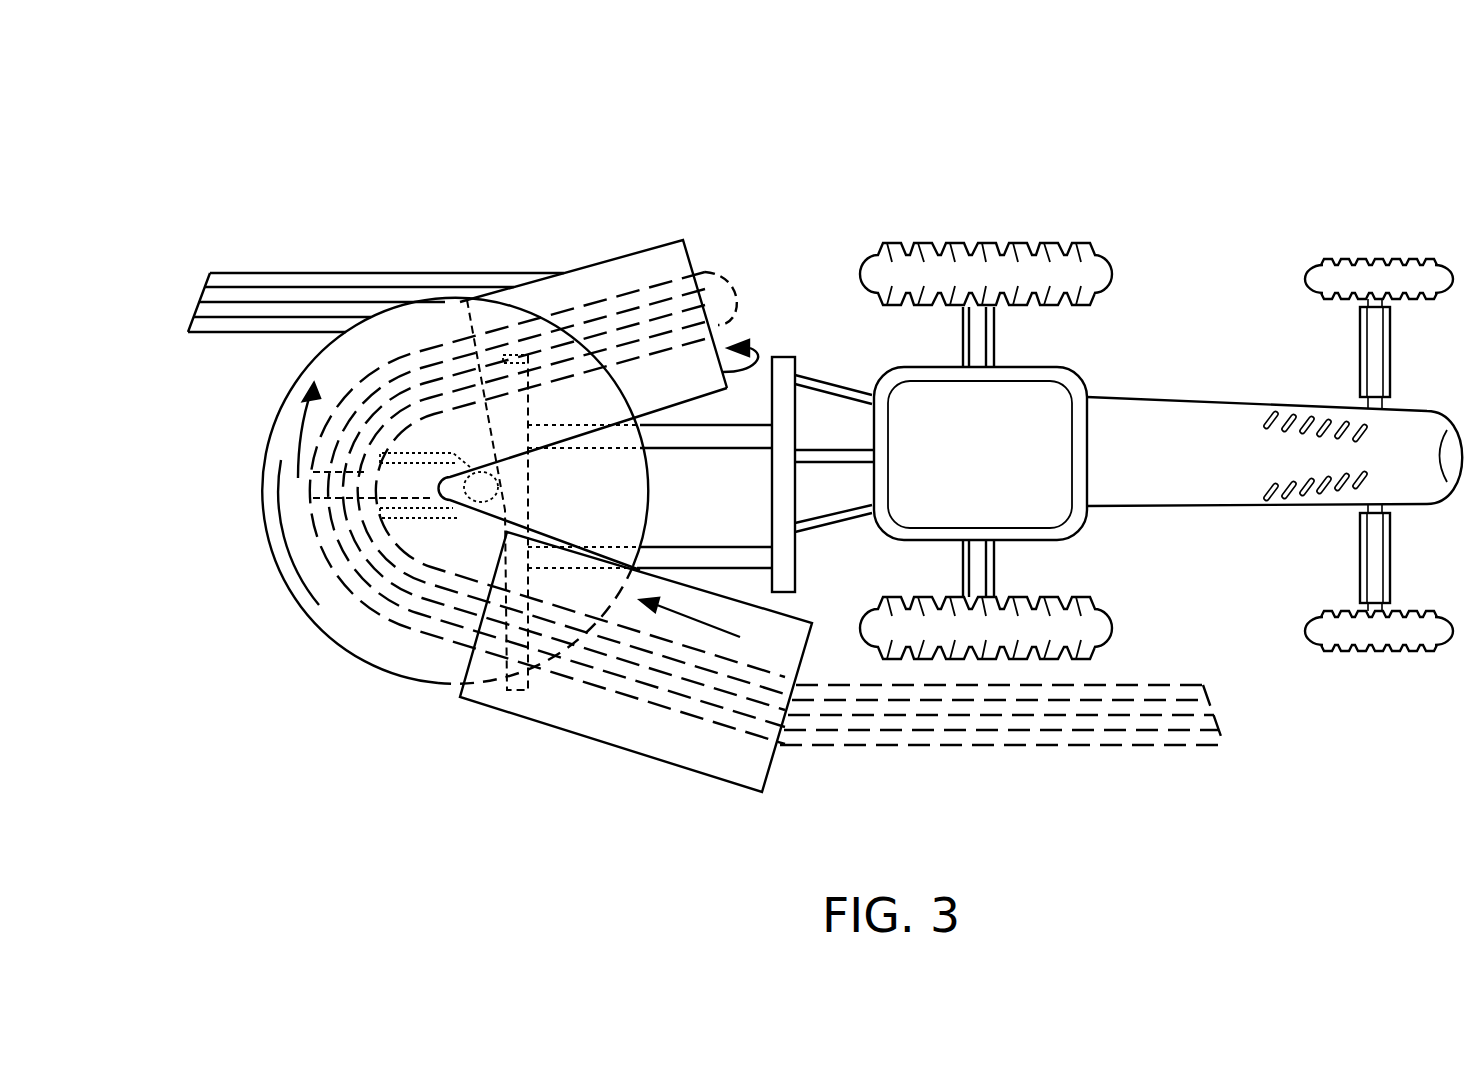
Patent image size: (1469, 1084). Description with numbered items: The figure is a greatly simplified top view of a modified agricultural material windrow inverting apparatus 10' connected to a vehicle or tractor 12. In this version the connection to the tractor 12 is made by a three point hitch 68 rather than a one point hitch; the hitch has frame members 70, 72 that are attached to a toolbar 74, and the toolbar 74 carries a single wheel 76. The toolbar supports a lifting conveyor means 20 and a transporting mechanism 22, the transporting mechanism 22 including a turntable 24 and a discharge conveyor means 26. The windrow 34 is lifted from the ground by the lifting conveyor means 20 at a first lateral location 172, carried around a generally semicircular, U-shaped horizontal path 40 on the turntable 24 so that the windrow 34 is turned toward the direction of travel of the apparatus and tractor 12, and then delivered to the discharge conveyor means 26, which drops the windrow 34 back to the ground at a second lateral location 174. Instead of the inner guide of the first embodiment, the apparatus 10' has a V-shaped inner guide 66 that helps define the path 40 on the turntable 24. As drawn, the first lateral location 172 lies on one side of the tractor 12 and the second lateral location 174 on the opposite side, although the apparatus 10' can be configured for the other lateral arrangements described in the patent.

The apparatus 10' is at (464, 486).
The tractor 12 is at (1177, 417).
The lifting conveyor means 20 is at (642, 742).
The transporting mechanism 22 is at (360, 642).
The turntable 24 is at (450, 555).
The discharge conveyor means 26 is at (596, 284).
The windrow 34 is at (387, 275).
The horizontal path 40 is at (300, 567).
The V-shaped inner guide 66 is at (492, 508).
The three point hitch 68 is at (813, 348).
The frame member 70 is at (787, 477).
The frame member 72 is at (689, 446).
The toolbar 74 is at (517, 467).
The single wheel 76 is at (307, 458).
The first lateral location 172 is at (1182, 742).
The second lateral location 174 is at (242, 275).